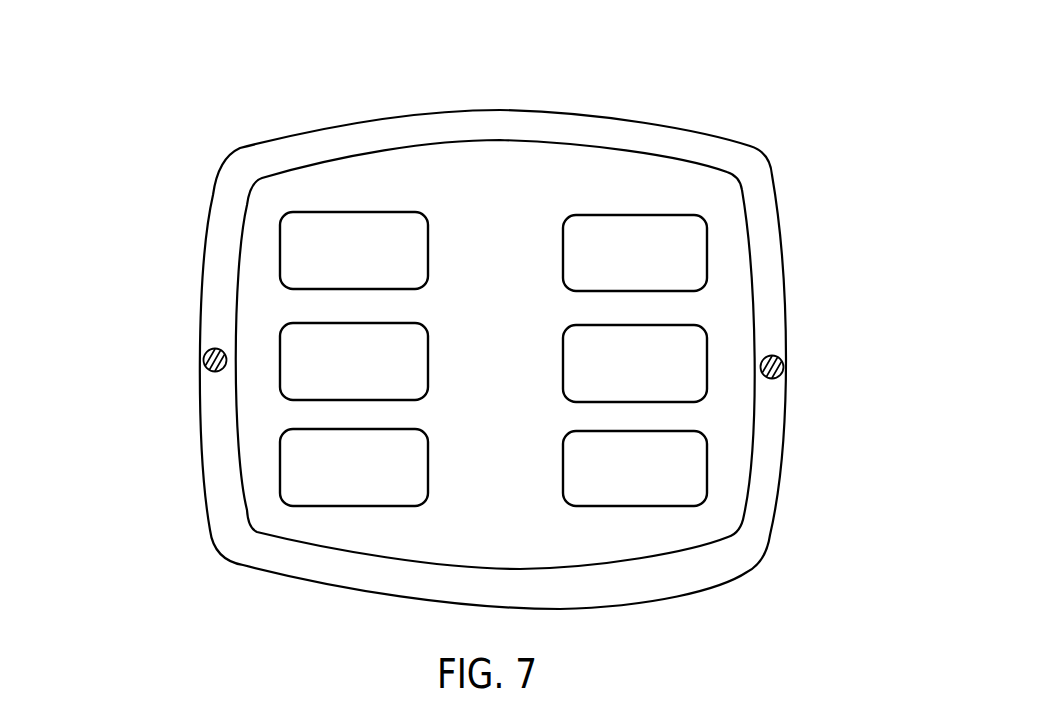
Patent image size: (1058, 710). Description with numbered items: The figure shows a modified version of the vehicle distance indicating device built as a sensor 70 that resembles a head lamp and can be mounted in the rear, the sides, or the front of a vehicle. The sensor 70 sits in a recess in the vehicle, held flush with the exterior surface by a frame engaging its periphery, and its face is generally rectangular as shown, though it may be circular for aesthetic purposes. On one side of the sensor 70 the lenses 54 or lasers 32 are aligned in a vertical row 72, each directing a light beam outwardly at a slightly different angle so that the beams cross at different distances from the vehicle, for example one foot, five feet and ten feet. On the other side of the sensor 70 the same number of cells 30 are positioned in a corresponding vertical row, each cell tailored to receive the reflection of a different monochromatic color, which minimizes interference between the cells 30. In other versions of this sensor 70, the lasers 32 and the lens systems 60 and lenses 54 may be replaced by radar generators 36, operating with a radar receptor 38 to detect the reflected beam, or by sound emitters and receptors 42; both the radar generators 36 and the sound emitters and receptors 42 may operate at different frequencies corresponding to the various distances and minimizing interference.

The cells 30 is at (840, 270).
The lasers 32 is at (127, 280).
The radar generator 36 is at (283, 352).
The radar receptor 38 is at (705, 348).
The sound emitters and receptors 42 is at (498, 266).
The lenses 54 is at (278, 453).
The lens systems 60 is at (705, 473).
The sensor 70 is at (217, 225).
The vertical row 72 is at (220, 432).